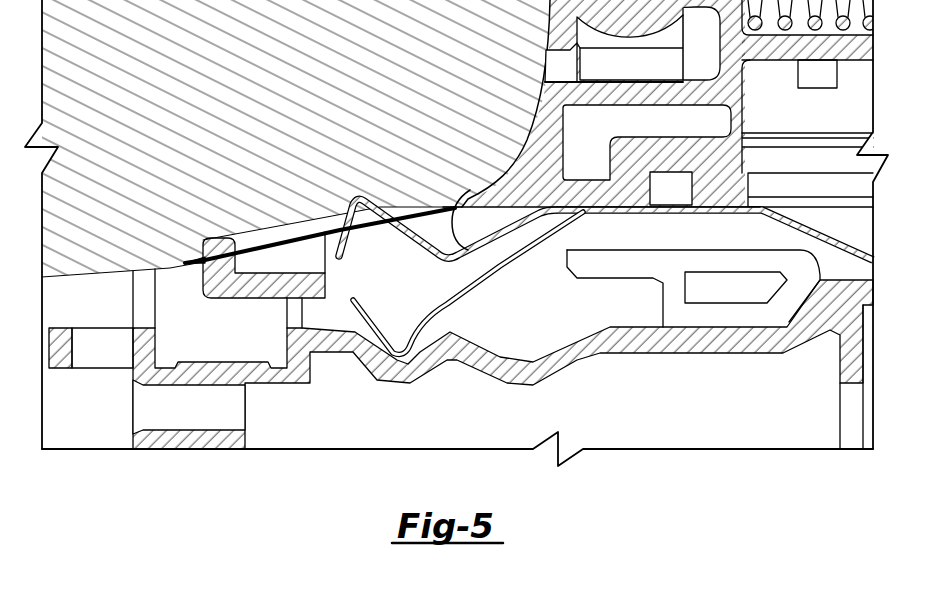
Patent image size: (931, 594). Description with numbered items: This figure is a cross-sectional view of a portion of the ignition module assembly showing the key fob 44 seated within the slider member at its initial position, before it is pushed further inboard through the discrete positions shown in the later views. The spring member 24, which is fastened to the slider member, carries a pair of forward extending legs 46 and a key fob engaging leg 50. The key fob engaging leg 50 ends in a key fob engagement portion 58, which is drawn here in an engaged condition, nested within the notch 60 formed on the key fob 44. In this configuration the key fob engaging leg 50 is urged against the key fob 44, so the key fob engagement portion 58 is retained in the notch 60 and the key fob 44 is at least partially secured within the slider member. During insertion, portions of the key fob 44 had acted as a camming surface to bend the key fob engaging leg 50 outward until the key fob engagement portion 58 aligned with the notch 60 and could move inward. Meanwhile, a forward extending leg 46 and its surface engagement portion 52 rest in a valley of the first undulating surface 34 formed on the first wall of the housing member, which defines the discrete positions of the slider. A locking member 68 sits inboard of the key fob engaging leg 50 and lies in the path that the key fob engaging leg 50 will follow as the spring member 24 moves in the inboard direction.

The spring member 24 is at (657, 213).
The first undulating surface 34 is at (553, 348).
The key fob 44 is at (77, 277).
The forward extending leg 46 is at (477, 293).
The key fob engaging leg 50 is at (468, 192).
The surface engagement portion 52 is at (400, 360).
The key fob engagement portion 58 is at (360, 198).
The notch 60 is at (333, 232).
The locking member 68 is at (640, 250).